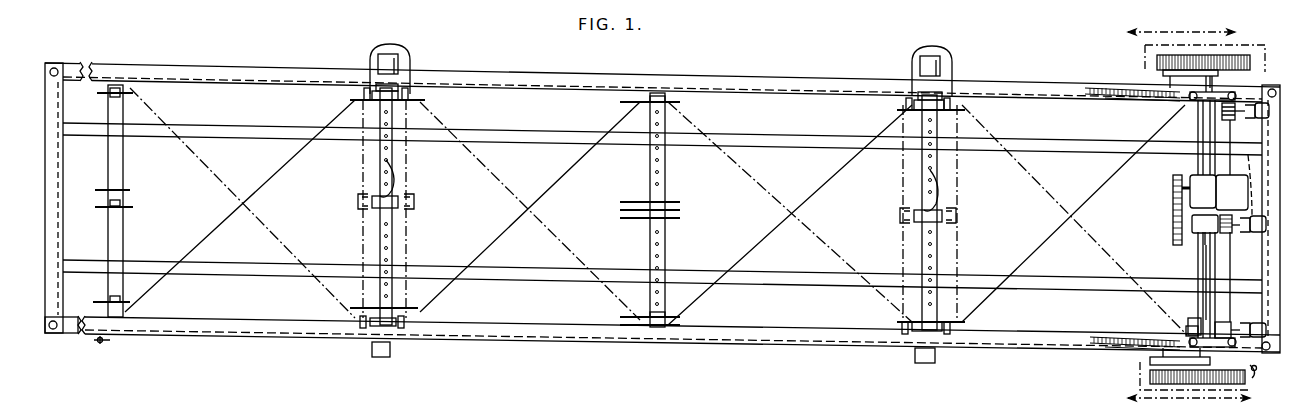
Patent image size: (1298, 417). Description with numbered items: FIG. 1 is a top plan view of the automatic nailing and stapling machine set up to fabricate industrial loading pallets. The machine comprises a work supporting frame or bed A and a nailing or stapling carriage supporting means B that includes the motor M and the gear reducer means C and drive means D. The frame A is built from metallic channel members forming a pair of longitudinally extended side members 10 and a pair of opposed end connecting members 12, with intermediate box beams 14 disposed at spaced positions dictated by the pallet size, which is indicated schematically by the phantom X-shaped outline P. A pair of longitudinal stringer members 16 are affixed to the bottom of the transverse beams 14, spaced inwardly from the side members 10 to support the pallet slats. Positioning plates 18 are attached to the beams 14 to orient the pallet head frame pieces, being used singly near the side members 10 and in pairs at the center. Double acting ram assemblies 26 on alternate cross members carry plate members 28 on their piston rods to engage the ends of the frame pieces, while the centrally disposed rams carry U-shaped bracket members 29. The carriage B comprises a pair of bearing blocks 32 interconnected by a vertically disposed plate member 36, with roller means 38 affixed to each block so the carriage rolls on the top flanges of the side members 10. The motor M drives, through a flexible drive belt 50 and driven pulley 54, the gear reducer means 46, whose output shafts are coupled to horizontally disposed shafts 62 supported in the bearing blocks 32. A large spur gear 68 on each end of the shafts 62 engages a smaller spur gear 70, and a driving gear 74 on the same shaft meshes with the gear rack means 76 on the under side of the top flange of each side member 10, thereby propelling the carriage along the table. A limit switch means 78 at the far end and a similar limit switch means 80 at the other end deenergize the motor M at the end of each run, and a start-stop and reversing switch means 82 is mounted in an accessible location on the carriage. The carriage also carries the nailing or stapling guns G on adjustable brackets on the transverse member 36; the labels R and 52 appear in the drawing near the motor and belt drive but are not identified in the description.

The side members 10 is at (728, 75).
The end connecting members 12 is at (64, 145).
The box beams 14 is at (108, 176).
The longitudinal stringer members 16 is at (787, 146).
The positioning plates 18 is at (110, 97).
The ram assemblies 26 is at (387, 88).
The plate members 28 is at (945, 335).
The U-shaped bracket members 29 is at (412, 202).
The bearing blocks 32 is at (1224, 93).
The vertically disposed plate member 36 is at (1228, 136).
The roller means 38 is at (1176, 338).
The gear reducer means 46 is at (1188, 236).
The flexible drive belt 50 is at (1176, 190).
The connector 52 is at (1178, 212).
The driven pulley 54 is at (1180, 232).
The horizontally disposed shafts 62 is at (1207, 272).
The spur gear 68 is at (1222, 57).
The spur gears 70 is at (1160, 62).
The driving gear 74 is at (1135, 98).
The gear rack means 76 is at (1095, 88).
The limit switch means 78 is at (102, 344).
The limit switch means 80 is at (1262, 379).
The start-stop and reversing switch means 82 is at (1207, 226).
The phantom X-shaped outline P is at (245, 88).
The work supporting frame A is at (785, 71).
The carriage supporting means B is at (1120, 70).
The gear reducer means C is at (1155, 190).
The drive means D is at (1123, 375).
The stapling or nailing guns G is at (1246, 176).
The drive motor M is at (1232, 192).
The reducer R is at (1205, 224).